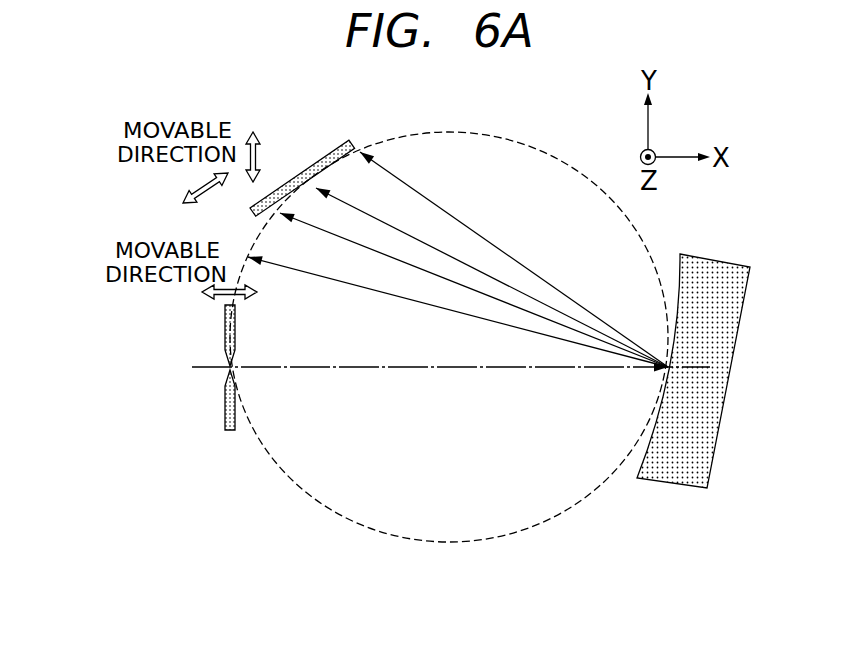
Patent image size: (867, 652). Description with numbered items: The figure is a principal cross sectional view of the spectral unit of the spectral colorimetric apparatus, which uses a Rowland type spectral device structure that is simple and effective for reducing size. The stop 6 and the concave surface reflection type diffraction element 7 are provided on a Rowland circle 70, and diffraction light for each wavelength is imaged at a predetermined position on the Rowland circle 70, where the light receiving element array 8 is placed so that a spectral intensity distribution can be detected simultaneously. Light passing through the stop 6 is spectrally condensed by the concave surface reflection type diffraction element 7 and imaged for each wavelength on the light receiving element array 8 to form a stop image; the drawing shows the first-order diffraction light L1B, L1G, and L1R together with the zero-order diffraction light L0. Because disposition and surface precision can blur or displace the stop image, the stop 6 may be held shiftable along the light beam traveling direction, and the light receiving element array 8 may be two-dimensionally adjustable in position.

The stop 6 is at (228, 432).
The concave surface reflection type diffraction element 7 is at (673, 488).
The light receiving element array 8 is at (317, 155).
The Rowland circle 70 is at (519, 530).
The zero-order diffraction light L0 is at (300, 275).
The first-order diffraction light L1R is at (470, 225).
The first-order diffraction light L1G is at (397, 223).
The first-order diffraction light L1B is at (365, 245).